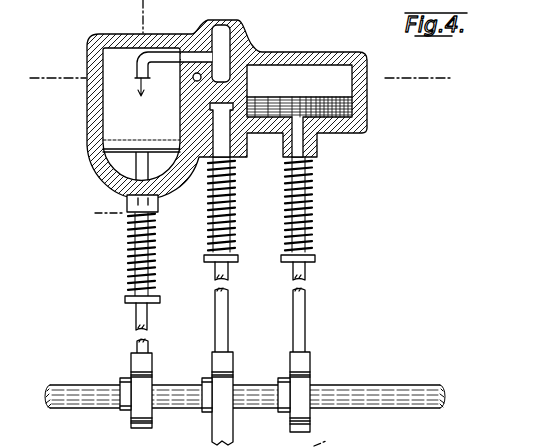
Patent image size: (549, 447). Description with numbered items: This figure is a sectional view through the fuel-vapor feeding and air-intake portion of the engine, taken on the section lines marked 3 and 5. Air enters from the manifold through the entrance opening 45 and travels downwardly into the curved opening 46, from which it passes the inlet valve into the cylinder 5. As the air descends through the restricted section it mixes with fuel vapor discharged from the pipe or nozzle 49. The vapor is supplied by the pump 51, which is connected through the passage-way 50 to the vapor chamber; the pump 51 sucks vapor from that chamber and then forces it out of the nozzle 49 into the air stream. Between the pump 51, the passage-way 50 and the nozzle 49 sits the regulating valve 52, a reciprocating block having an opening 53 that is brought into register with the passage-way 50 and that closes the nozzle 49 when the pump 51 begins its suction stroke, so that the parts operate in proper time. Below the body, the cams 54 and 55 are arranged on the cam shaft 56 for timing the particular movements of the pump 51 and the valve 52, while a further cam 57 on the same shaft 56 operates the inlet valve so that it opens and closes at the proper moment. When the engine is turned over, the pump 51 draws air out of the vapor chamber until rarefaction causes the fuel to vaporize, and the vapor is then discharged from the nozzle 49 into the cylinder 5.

The section line 3- 3 is at (239, 73).
The cylinder 5 is at (209, 322).
The entrance opening 45 is at (118, 77).
The curved opening 46 is at (123, 162).
The pipe or nozzle 49 is at (136, 72).
The passage-way 50 is at (194, 80).
The pump 51 is at (328, 116).
The regulating valve 52 is at (207, 122).
The opening 53 is at (247, 92).
The cam 54 is at (223, 392).
The cam 55 is at (312, 386).
The cam shaft 56 is at (392, 397).
The cam 57 is at (142, 405).